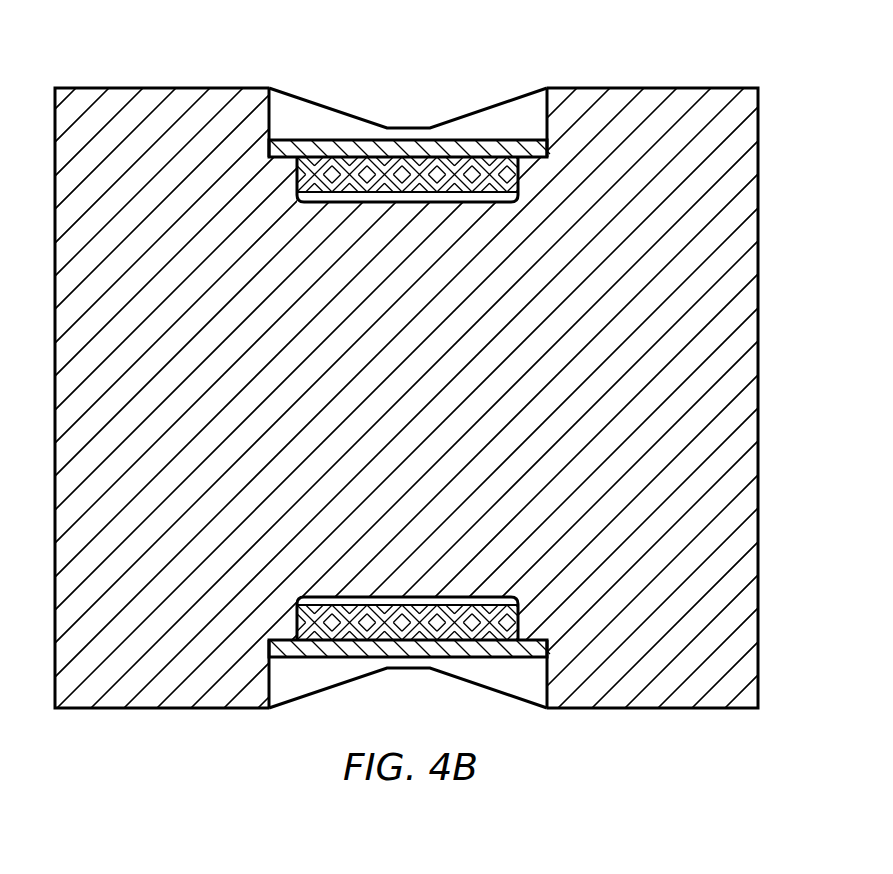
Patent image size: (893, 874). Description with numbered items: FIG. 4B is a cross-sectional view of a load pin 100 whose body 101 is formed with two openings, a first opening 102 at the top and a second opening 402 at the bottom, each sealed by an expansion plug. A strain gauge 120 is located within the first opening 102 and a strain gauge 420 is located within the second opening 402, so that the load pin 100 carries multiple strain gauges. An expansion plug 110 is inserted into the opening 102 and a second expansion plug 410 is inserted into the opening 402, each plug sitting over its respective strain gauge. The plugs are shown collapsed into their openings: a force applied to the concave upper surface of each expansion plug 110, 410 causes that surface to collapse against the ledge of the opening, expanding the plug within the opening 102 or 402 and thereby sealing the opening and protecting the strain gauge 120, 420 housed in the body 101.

The load pin 100 is at (446, 385).
The body 101 is at (667, 120).
The opening 102 is at (481, 100).
The expansion plug 110 is at (343, 140).
The strain gauge 120 is at (453, 202).
The opening 402 is at (444, 701).
The expansion plug 410 is at (343, 652).
The strain gauge 420 is at (442, 597).